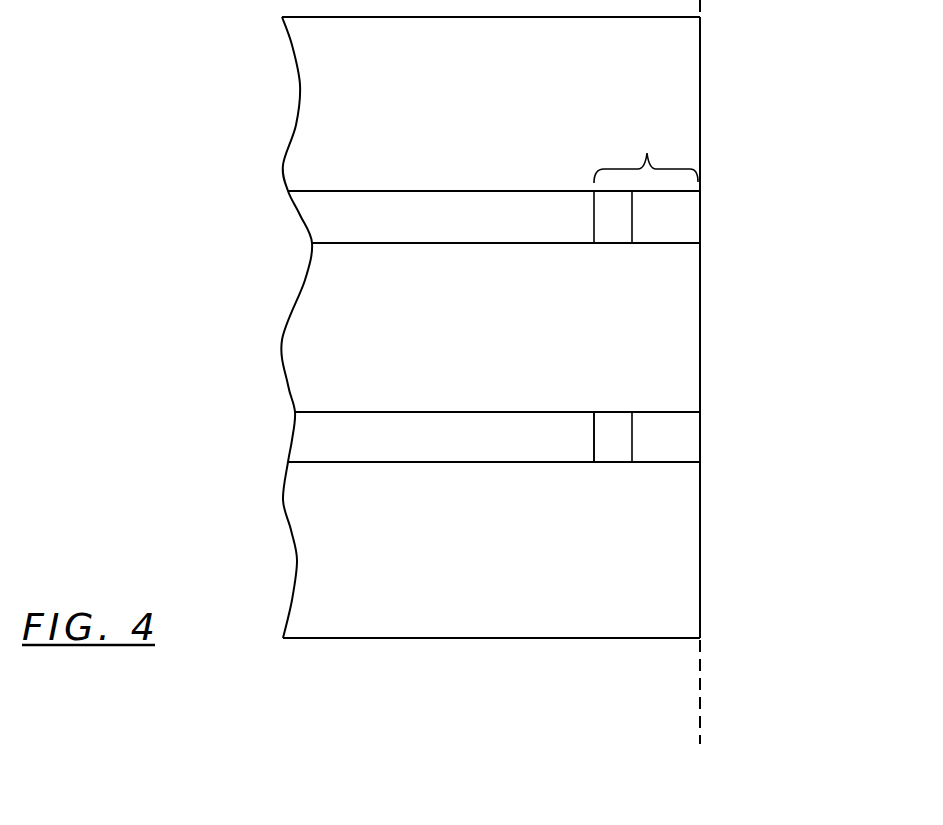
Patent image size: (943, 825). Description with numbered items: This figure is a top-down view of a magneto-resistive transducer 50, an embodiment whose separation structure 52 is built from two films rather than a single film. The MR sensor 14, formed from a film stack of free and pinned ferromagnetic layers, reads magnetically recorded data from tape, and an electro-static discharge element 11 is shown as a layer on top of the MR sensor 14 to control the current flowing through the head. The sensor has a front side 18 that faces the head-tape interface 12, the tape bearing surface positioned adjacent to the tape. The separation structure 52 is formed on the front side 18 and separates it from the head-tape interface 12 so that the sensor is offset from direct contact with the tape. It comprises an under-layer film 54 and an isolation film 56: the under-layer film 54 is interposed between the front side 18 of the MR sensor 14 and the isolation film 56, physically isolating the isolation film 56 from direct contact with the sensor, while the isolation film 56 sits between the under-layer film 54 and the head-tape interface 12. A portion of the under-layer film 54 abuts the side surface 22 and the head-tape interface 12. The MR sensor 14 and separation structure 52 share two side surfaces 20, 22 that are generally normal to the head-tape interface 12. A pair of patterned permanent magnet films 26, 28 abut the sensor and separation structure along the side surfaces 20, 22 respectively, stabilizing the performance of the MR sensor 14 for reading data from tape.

The MR transducer 50 is at (770, 62).
The separation structure 52 is at (646, 150).
The under-layer film 54 is at (615, 223).
The isolation film 56 is at (675, 439).
The permanent magnet film 26 is at (498, 95).
The side surface 20 is at (309, 193).
The electro-static discharge element 11 is at (441, 361).
The side surface 22 is at (307, 462).
The front side 18 is at (593, 444).
The MR sensor 14 is at (382, 450).
The permanent magnet film 28 is at (498, 575).
The head-tape interface 12 is at (701, 688).